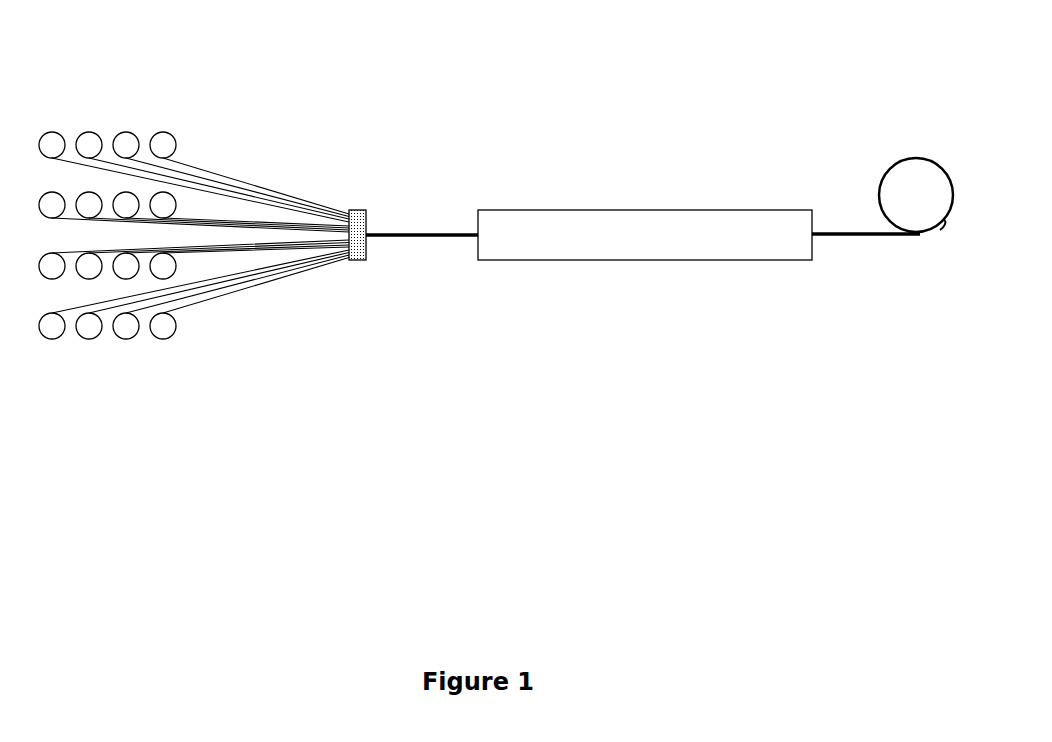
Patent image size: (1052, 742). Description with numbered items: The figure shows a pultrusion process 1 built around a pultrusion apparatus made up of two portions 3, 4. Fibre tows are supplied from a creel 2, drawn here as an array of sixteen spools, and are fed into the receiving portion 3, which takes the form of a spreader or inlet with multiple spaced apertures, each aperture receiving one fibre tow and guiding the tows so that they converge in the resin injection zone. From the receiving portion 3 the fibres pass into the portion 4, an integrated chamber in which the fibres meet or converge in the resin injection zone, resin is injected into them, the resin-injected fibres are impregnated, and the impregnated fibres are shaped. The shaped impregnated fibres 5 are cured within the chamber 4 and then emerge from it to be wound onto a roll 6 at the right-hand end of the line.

The pultrusion process 1 is at (72, 93).
The creel 2 is at (38, 354).
The receiving portion 3 is at (356, 262).
The injecting, impregnating and shaping portion 4 is at (652, 241).
The shaped impregnated fibres 5 is at (866, 238).
The roll 6 is at (943, 226).